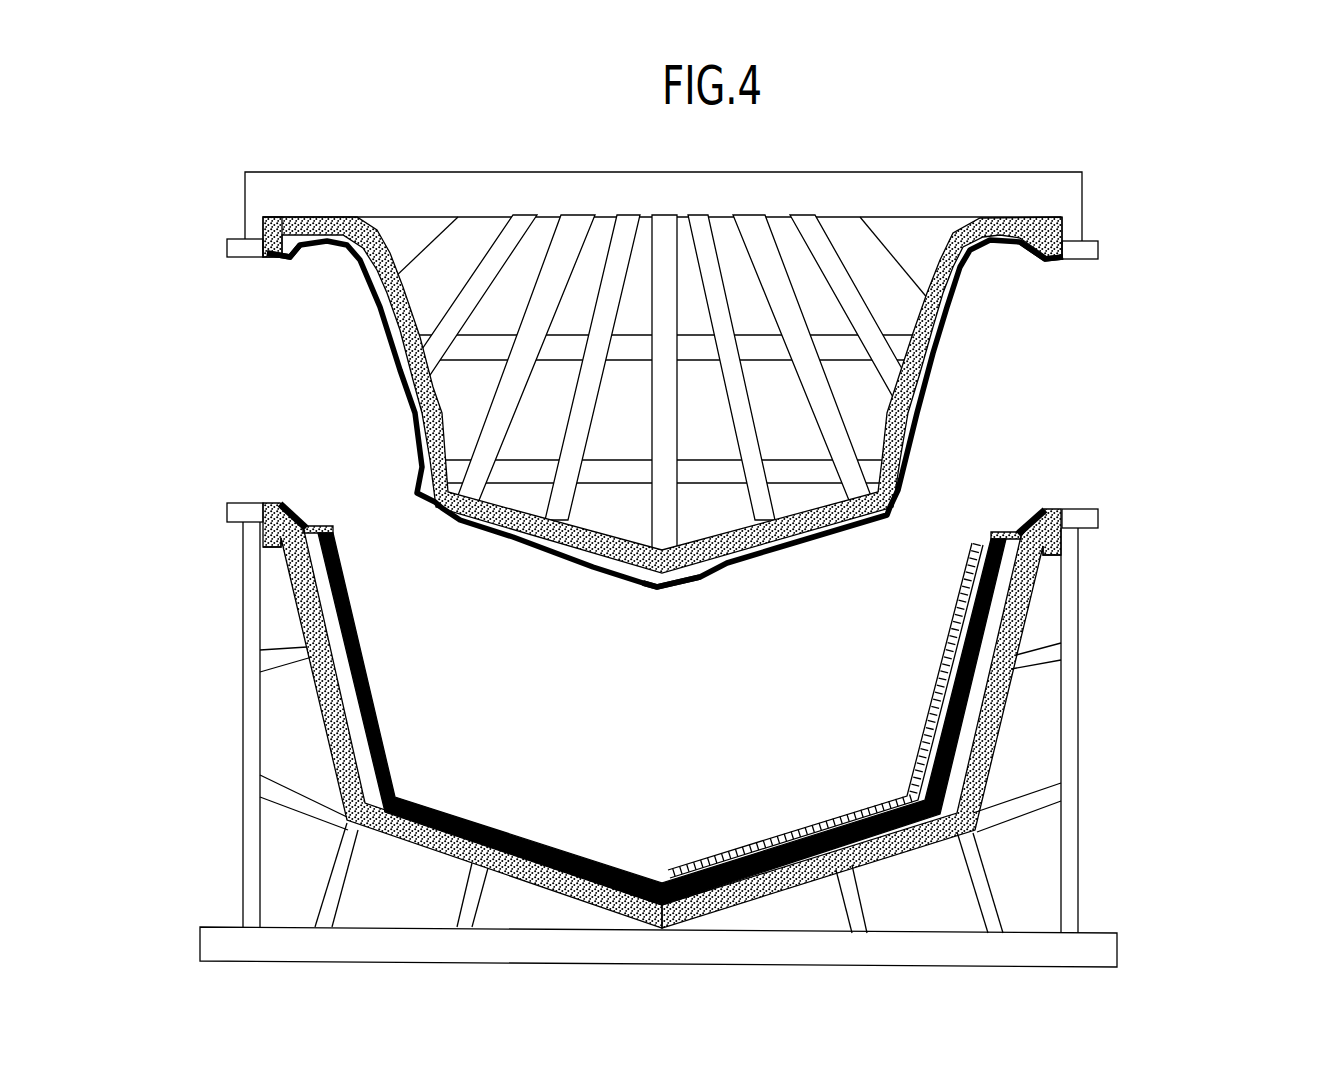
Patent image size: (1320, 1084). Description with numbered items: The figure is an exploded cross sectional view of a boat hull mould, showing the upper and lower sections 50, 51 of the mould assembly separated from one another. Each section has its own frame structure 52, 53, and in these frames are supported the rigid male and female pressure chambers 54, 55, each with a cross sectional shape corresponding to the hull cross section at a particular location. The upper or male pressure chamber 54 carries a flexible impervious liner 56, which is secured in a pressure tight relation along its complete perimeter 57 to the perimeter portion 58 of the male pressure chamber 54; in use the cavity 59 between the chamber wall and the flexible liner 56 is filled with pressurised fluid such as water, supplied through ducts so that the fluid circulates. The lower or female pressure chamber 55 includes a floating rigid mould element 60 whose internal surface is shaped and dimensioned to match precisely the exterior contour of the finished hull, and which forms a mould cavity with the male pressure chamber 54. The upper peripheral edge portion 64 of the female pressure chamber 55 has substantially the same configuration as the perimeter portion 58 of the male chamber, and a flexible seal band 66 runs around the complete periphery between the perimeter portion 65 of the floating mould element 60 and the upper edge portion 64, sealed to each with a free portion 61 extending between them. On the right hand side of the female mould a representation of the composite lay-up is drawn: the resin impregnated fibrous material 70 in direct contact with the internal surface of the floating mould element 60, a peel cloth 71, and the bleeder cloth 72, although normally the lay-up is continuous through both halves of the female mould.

The upper section 50 is at (723, 373).
The lower section 51 is at (741, 717).
The frame structure 52 is at (704, 735).
The frame structure 53 is at (662, 189).
The male pressure chamber 54 is at (659, 380).
The female pressure chamber 55 is at (673, 715).
The flexible impervious liner 56 is at (732, 600).
The perimeter 57 is at (666, 281).
The perimeter portion 58 is at (659, 222).
The cavity 59 is at (666, 433).
The floating rigid mould element 60 is at (931, 710).
The free portion 61 is at (738, 515).
The upper peripheral edge portion 64 is at (673, 564).
The perimeter portion 65 is at (662, 533).
The flexible seal band 66 is at (662, 501).
The resin impregnated fibrous material 70 is at (662, 719).
The peel cloth 71 is at (662, 719).
The bleeder cloth 72 is at (662, 719).